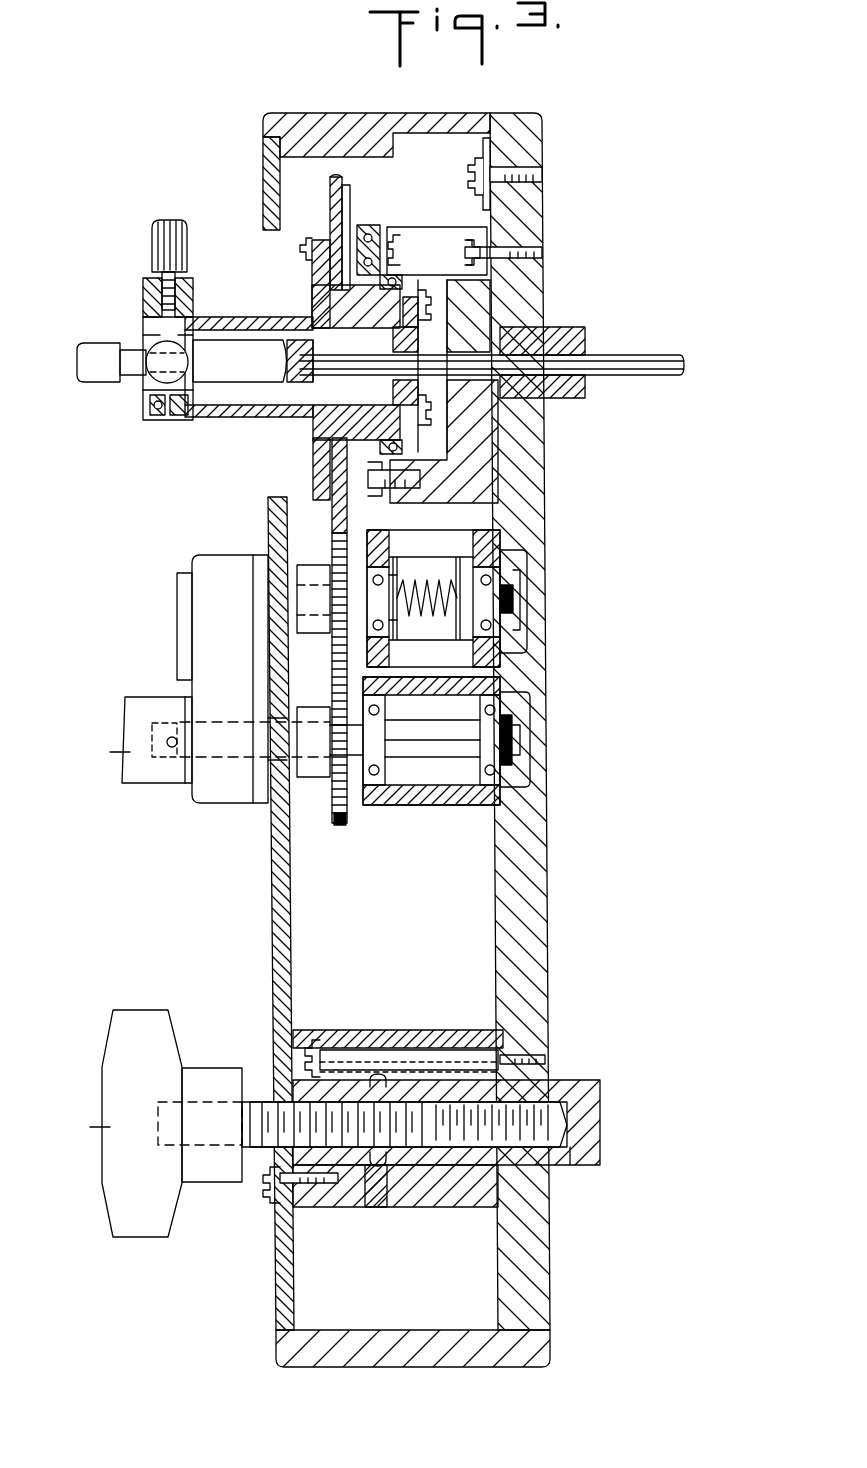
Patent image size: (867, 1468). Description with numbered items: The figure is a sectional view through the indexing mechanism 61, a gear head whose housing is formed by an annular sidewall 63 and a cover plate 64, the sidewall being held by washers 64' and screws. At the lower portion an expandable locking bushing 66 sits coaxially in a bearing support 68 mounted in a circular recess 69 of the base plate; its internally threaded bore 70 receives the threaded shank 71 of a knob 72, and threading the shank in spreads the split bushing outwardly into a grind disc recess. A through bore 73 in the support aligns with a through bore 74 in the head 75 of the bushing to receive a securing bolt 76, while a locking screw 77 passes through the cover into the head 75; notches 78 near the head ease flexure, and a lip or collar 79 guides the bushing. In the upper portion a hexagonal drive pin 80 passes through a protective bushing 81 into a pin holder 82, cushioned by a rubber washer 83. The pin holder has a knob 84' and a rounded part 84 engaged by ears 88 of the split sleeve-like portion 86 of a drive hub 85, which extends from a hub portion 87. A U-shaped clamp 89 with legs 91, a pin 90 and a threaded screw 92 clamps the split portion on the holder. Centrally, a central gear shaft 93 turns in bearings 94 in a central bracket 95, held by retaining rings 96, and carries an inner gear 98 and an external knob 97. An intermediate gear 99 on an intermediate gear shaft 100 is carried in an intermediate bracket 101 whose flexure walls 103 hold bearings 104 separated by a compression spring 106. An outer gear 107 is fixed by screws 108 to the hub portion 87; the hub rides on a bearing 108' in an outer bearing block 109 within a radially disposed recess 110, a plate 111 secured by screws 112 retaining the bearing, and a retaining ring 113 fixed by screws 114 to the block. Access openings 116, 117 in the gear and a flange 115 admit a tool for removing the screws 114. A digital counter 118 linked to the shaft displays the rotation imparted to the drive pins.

The indexing mechanism 61 is at (572, 226).
The annular sidewall 63 is at (327, 122).
The cover plate 64 is at (237, 182).
The washers 64' is at (503, 139).
The expandable locking bushing 66 is at (600, 1083).
The bearing support 68 is at (428, 1210).
The circular recess 69 is at (482, 1207).
The internally threaded bore 70 is at (580, 1165).
The threaded shank 71 is at (257, 1105).
The knob 72 is at (120, 1127).
The through bore 73 is at (440, 1045).
The through bore 74 is at (346, 1050).
The head 75 is at (338, 1212).
The securing bolt 76 is at (312, 1040).
The locking screw 77 is at (266, 1195).
The notches 78 is at (385, 1210).
The lip or collar 79 is at (378, 1068).
The drive pin 80 is at (684, 356).
The protective bushing 81 is at (585, 396).
The pin holder 82 is at (243, 382).
The rubber washer 83 is at (356, 422).
The rounded part 84 is at (133, 386).
The knob 84' is at (79, 379).
The drive hub 85 is at (312, 429).
The split sleeve-like portion 86 is at (242, 318).
The hub portion 87 is at (322, 305).
The ears 88 is at (150, 338).
The U-shaped clamp 89 is at (132, 268).
The pin 90 is at (166, 396).
The legs 91 is at (150, 398).
The threaded screw 92 is at (168, 220).
The central gear shaft 93 is at (457, 745).
The bearings 94 is at (378, 782).
The central bracket 95 is at (437, 802).
The retaining rings 96 is at (506, 768).
The knob 97 is at (123, 753).
The inner gear 98 is at (344, 814).
The intermediate gear 99 is at (335, 660).
The intermediate gear shaft 100 is at (516, 597).
The intermediate bracket 101 is at (433, 536).
The flexure walls 103 is at (470, 540).
The bearings 104 is at (383, 623).
The compression spring 106 is at (489, 626).
The outer gear 107 is at (343, 205).
The screws 108 is at (268, 258).
The bearing 108' is at (434, 249).
The outer bearing block 109 is at (409, 230).
The radially disposed recess 110 is at (493, 277).
The plate 111 is at (448, 294).
The screws 112 is at (440, 312).
The retaining ring 113 is at (371, 232).
The screws 114 is at (330, 278).
The flange 115 is at (318, 223).
The access opening 116 is at (284, 519).
The access opening 117 is at (314, 480).
The digital counter 118 is at (188, 566).